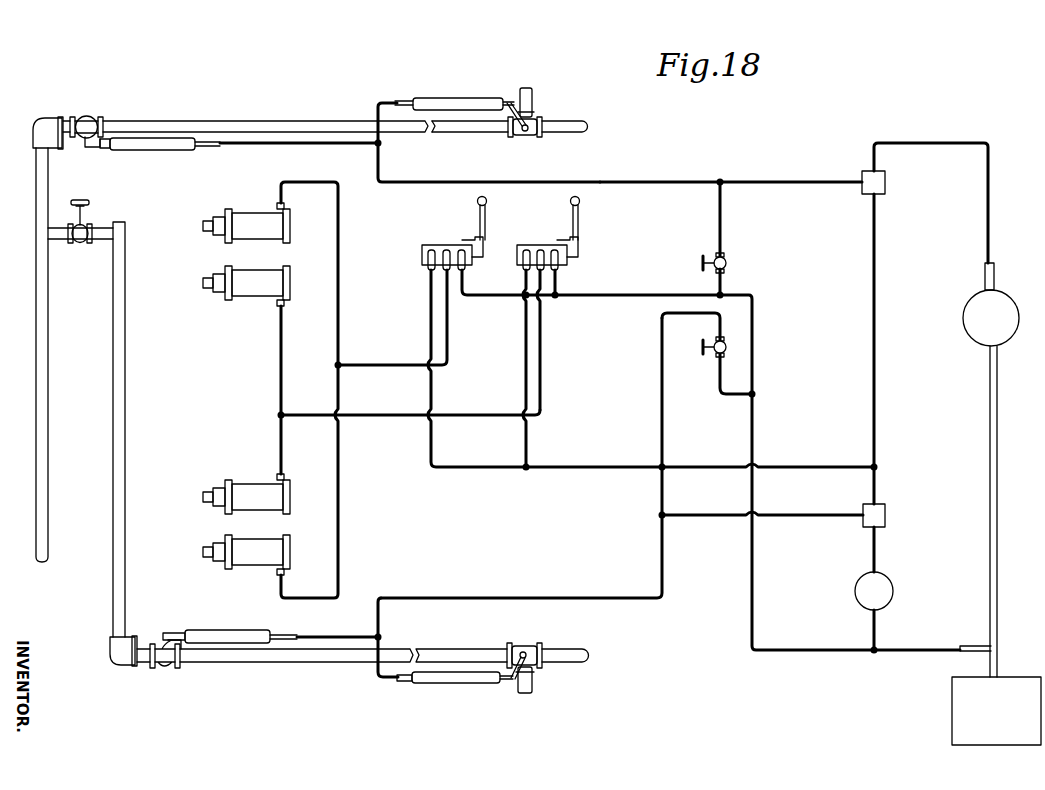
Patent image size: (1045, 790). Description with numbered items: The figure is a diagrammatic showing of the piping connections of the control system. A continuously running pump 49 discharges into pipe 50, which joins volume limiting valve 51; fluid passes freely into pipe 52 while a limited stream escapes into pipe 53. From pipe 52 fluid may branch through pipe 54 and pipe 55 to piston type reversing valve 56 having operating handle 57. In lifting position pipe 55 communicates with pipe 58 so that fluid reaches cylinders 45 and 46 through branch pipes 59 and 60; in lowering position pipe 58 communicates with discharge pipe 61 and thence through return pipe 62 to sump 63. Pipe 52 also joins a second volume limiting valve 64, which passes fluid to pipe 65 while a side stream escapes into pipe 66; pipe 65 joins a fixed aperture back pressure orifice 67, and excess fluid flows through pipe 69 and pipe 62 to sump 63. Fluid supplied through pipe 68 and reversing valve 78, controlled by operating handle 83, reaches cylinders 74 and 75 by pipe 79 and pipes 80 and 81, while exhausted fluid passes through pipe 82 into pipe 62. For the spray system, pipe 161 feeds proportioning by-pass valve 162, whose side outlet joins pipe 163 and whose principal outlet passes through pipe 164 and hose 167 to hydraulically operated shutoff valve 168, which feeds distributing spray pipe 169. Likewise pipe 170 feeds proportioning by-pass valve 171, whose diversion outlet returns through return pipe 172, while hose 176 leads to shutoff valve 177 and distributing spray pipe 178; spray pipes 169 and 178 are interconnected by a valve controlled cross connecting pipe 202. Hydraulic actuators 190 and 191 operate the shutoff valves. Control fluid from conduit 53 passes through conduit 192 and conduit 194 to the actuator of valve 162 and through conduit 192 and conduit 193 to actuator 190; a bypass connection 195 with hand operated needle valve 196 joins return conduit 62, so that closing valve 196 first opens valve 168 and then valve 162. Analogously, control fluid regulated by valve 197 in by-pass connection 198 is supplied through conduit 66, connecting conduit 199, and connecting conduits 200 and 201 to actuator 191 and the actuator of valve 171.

The hydraulic cylinder 45 is at (262, 480).
The hydraulic cylinder 46 is at (250, 302).
The pump 49 is at (994, 300).
The pipe 50 is at (930, 141).
The volume limiting valve 51 is at (885, 184).
The pipe 52 is at (874, 313).
The pipe 53 is at (780, 180).
The pipe 54 is at (794, 460).
The pipe 55 is at (522, 370).
The piston type reversing valve 56 is at (530, 246).
The operating handle 57 is at (581, 202).
The pipe 58 is at (544, 368).
The branch pipe 59 is at (278, 442).
The branch pipe 60 is at (278, 378).
The discharge pipe 61 is at (560, 286).
The return pipe 62 is at (616, 301).
The sump 63 is at (950, 708).
The volume limiting valve 64 is at (886, 514).
The pipe 65 is at (878, 550).
The pipe 66 is at (786, 520).
The back pressure orifice 67 is at (884, 592).
The pipe 68 is at (436, 461).
The pipe 69 is at (879, 628).
The hydraulic cylinder 74 is at (252, 578).
The hydraulic cylinder 75 is at (250, 206).
The reversing valve 78 is at (432, 244).
The pipe 79 is at (450, 335).
The pipe 80 is at (344, 524).
The pipe 81 is at (342, 305).
The pipe 82 is at (496, 292).
The operating handle 83 is at (488, 202).
The pipe 161 is at (574, 120).
The proportioning by-pass valve 162 is at (526, 136).
The pipe 163 is at (534, 94).
The pipe 164 is at (455, 134).
The hose 167 is at (195, 118).
The shutoff valve 168 is at (90, 112).
The distributing spray pipe 169 is at (34, 413).
The pipe 170 is at (556, 646).
The proportioning by-pass valve 171 is at (514, 644).
The return pipe 172 is at (534, 686).
The hose 176 is at (437, 647).
The shutoff valve 177 is at (166, 668).
The distributing spray pipe 178 is at (127, 462).
The hydraulic actuator 190 is at (147, 153).
The hydraulic actuator 191 is at (230, 627).
The conduit 192 is at (581, 181).
The conduit 193 is at (268, 146).
The conduit 194 is at (370, 103).
The bypass connection 195 is at (720, 229).
The needle valve 196 is at (727, 264).
The valve 197 is at (702, 352).
The by-pass connection 198 is at (662, 430).
The connecting conduit 199 is at (576, 594).
The connecting conduit 200 is at (342, 628).
The connecting conduit 201 is at (368, 676).
The cross connecting pipe 202 is at (84, 250).